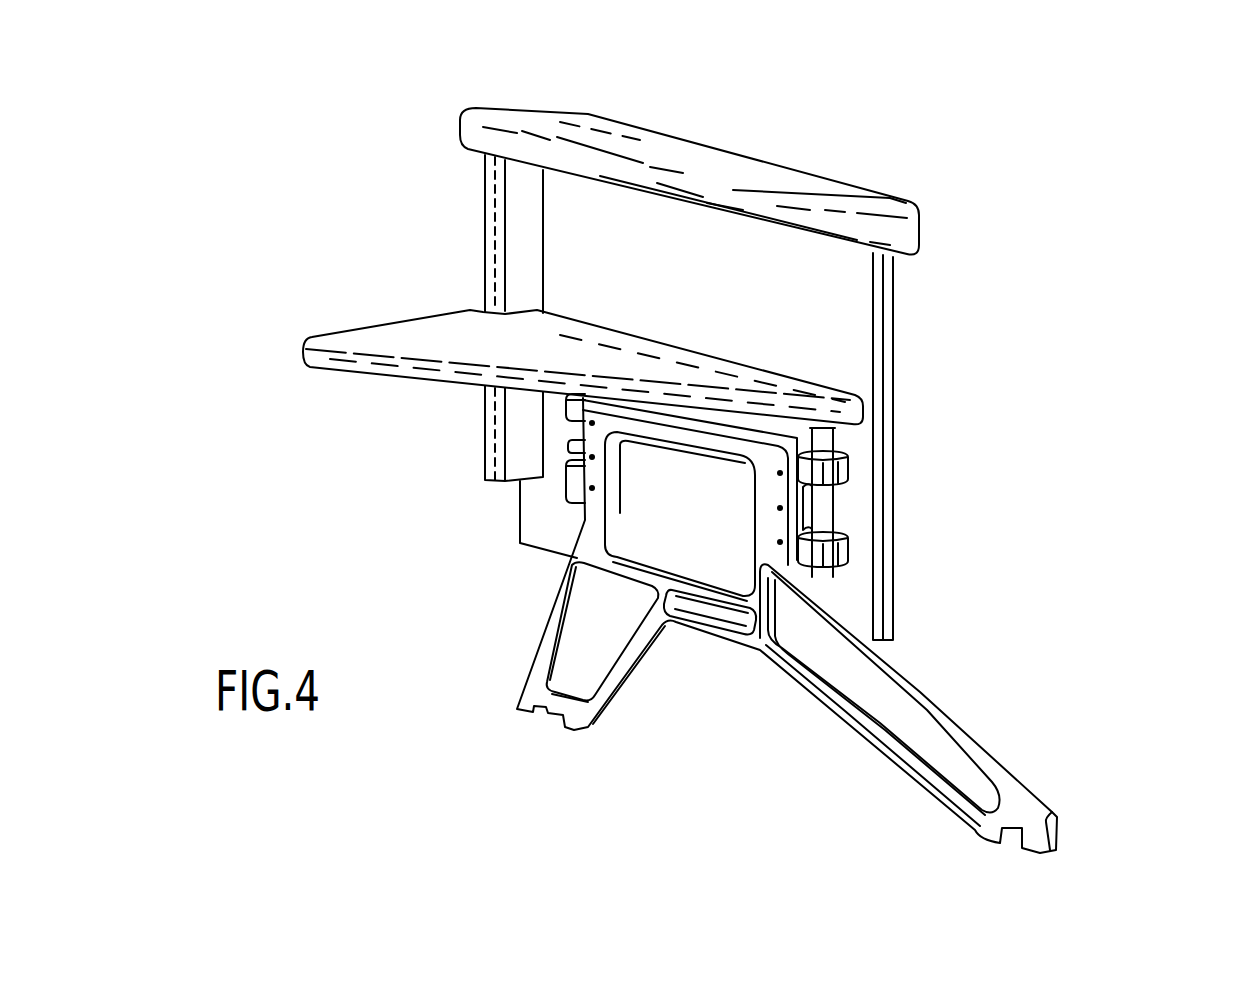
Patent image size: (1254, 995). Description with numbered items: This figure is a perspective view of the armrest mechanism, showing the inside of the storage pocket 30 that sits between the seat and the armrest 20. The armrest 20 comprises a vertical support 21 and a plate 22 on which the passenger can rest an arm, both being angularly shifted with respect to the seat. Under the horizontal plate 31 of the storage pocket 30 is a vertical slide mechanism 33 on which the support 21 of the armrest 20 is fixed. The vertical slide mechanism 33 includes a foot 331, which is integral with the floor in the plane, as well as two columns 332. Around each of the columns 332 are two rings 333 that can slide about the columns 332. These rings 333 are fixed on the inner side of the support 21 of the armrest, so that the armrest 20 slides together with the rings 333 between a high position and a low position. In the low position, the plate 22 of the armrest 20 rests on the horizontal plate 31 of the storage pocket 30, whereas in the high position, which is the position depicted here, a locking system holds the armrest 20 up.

The armrest 20 is at (705, 172).
The vertical support 21 is at (838, 302).
The plate 22 is at (553, 128).
The storage pocket 30 is at (268, 410).
The horizontal plate 31 is at (430, 345).
The vertical slide mechanism 33 is at (336, 440).
The foot 331 is at (928, 696).
The columns 332 is at (578, 444).
The rings 333 is at (578, 404).